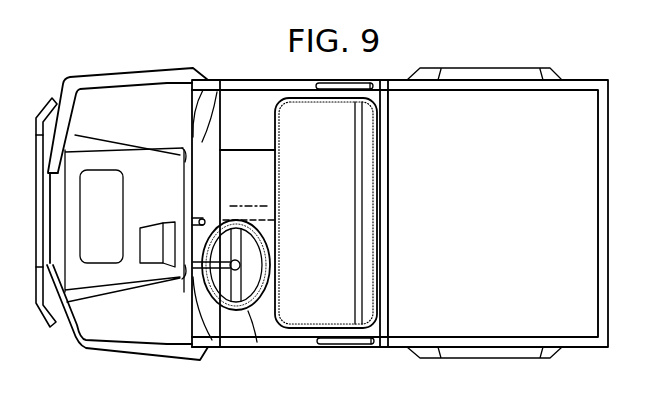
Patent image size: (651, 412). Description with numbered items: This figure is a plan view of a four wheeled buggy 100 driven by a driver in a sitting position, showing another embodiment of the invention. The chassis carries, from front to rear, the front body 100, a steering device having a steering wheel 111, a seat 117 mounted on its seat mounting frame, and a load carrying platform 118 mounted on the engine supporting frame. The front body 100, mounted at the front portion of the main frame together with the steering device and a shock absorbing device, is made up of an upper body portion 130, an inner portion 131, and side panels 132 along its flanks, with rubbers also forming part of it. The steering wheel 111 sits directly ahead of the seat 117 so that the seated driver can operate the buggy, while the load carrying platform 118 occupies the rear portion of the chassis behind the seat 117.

The four wheeled buggy 100 is at (130, 58).
The upper body portion 130 is at (97, 105).
The inner portion 131 is at (200, 143).
The side panels 132 is at (130, 350).
The steering wheel 111 is at (242, 309).
The seat 117 is at (306, 317).
The load carrying platform 118 is at (567, 323).